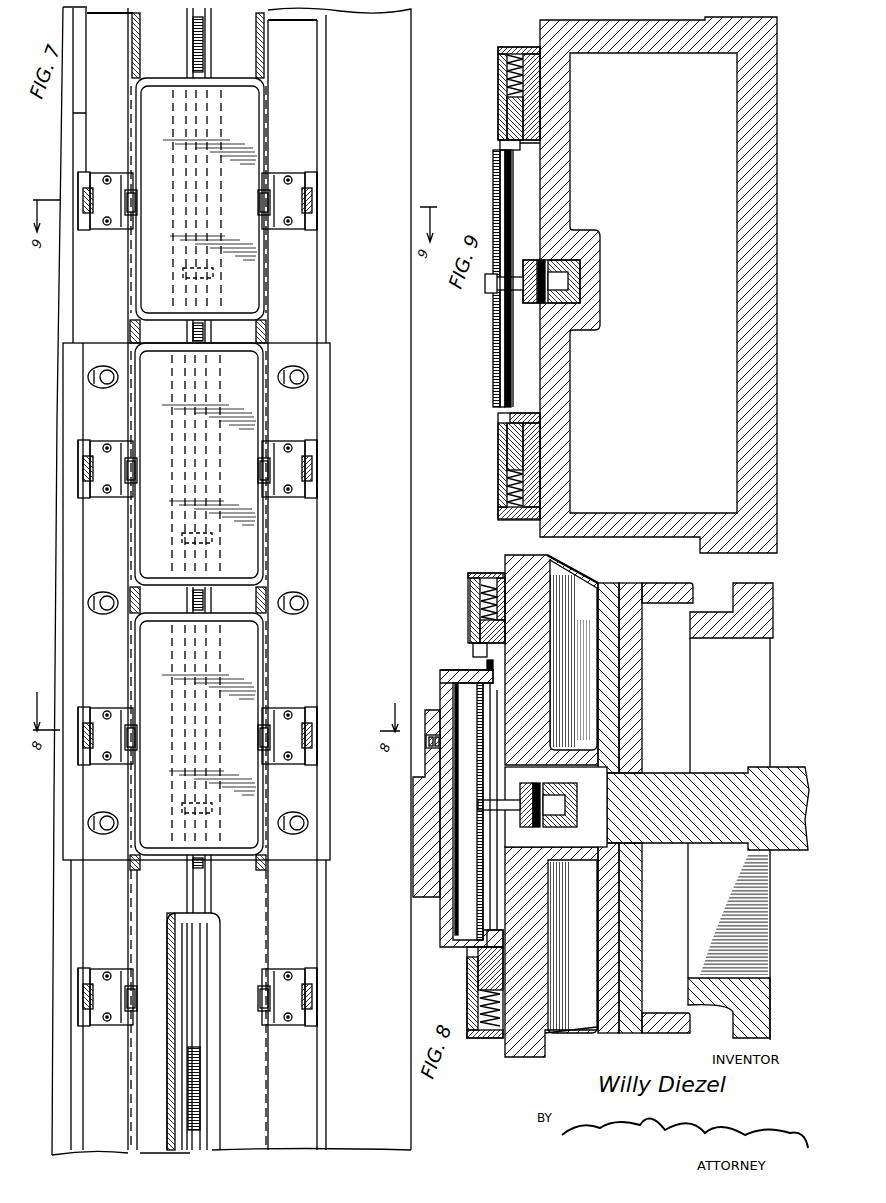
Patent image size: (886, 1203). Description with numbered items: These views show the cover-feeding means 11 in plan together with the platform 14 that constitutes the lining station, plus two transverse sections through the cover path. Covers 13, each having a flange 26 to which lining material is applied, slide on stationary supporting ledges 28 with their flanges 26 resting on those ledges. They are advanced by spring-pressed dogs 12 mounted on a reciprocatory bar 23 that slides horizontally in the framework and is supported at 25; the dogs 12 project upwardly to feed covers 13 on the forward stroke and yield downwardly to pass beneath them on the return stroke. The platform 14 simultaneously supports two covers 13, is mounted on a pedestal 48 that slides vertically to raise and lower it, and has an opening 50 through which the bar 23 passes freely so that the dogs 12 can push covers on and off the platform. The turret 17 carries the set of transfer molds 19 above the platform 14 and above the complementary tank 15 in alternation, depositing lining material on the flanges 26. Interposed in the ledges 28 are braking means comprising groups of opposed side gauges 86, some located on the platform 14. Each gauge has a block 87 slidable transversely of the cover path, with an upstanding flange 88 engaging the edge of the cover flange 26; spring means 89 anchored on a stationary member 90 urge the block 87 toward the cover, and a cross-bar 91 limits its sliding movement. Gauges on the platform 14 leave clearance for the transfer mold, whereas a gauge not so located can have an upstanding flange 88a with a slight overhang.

In FIG. 7, the cover-feeding means 11 is at (205, 895).
In FIG. 9, the cover-feeding means 11 is at (517, 254).
In FIG. 8, the cover-feeding means 11 is at (522, 840).
In FIG. 7, the dogs 12 is at (198, 36).
In FIG. 9, the dogs 12 is at (494, 296).
In FIG. 8, the dogs 12 is at (496, 803).
In FIG. 7, the covers 13 is at (199, 466).
In FIG. 9, the covers 13 is at (505, 326).
In FIG. 8, the covers 13 is at (455, 688).
In FIG. 7, the platform 14 is at (312, 567).
In FIG. 8, the platform 14 is at (548, 558).
In FIG. 8, the tank 15 is at (441, 678).
In FIG. 8, the turret 17 is at (430, 710).
In FIG. 8, the set of transfer molds 19 is at (488, 670).
In FIG. 7, the reciprocatory bar 23 is at (185, 912).
In FIG. 9, the reciprocatory bar 23 is at (567, 308).
In FIG. 9, the bar support 25 is at (585, 283).
In FIG. 8, the bar support 25 is at (577, 812).
In FIG. 7, the flange 26 is at (262, 558).
In FIG. 9, the flange 26 is at (510, 418).
In FIG. 8, the flange 26 is at (553, 972).
In FIG. 7, the ledges 28 is at (129, 33).
In FIG. 9, the ledges 28 is at (540, 143).
In FIG. 8, the pedestal 48 is at (728, 785).
In FIG. 8, the opening 50 is at (586, 768).
In FIG. 7, the side gauges 86 is at (71, 188).
In FIG. 9, the side gauges 86 is at (485, 96).
In FIG. 8, the side gauges 86 is at (449, 605).
In FIG. 7, the block 87 is at (258, 203).
In FIG. 9, the block 87 is at (531, 116).
In FIG. 8, the block 87 is at (497, 633).
In FIG. 8, the upstanding flange 88 is at (486, 665).
In FIG. 9, the upstanding flange 88a is at (500, 146).
In FIG. 7, the spring means 89 is at (310, 204).
In FIG. 9, the spring means 89 is at (507, 64).
In FIG. 8, the spring means 89 is at (472, 575).
In FIG. 7, the stationary member 90 is at (82, 172).
In FIG. 9, the stationary member 90 is at (514, 47).
In FIG. 8, the stationary member 90 is at (482, 573).
In FIG. 7, the cross-bar 91 is at (115, 173).
In FIG. 9, the cross-bar 91 is at (499, 116).
In FIG. 8, the cross-bar 91 is at (470, 636).